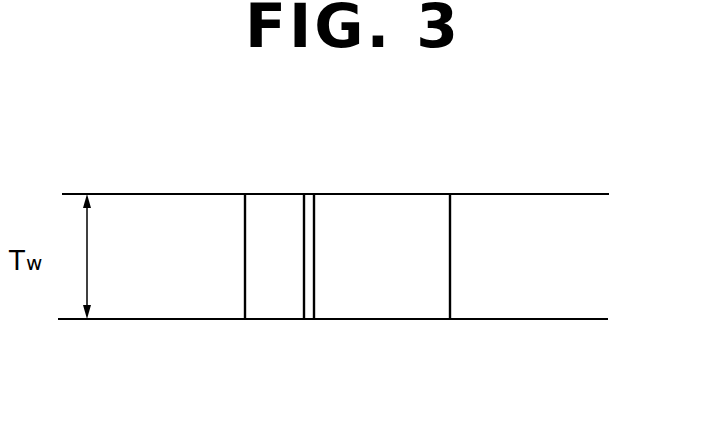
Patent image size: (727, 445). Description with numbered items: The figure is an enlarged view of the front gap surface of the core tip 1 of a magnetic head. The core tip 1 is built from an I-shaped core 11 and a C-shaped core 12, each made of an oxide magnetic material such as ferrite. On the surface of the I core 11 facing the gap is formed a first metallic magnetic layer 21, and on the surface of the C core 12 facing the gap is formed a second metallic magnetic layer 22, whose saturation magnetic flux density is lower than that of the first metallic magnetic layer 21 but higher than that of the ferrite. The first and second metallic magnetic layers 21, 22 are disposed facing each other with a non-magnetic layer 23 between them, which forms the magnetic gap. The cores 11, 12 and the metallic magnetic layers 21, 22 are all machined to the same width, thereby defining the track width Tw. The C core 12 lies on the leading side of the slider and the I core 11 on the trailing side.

The core tip 1 is at (508, 190).
The I-shaped core 11 is at (160, 293).
The C-shaped core 12 is at (533, 297).
The first metallic magnetic layer 21 is at (277, 210).
The second metallic magnetic layer 22 is at (396, 215).
The non-magnetic layer 23 is at (310, 307).